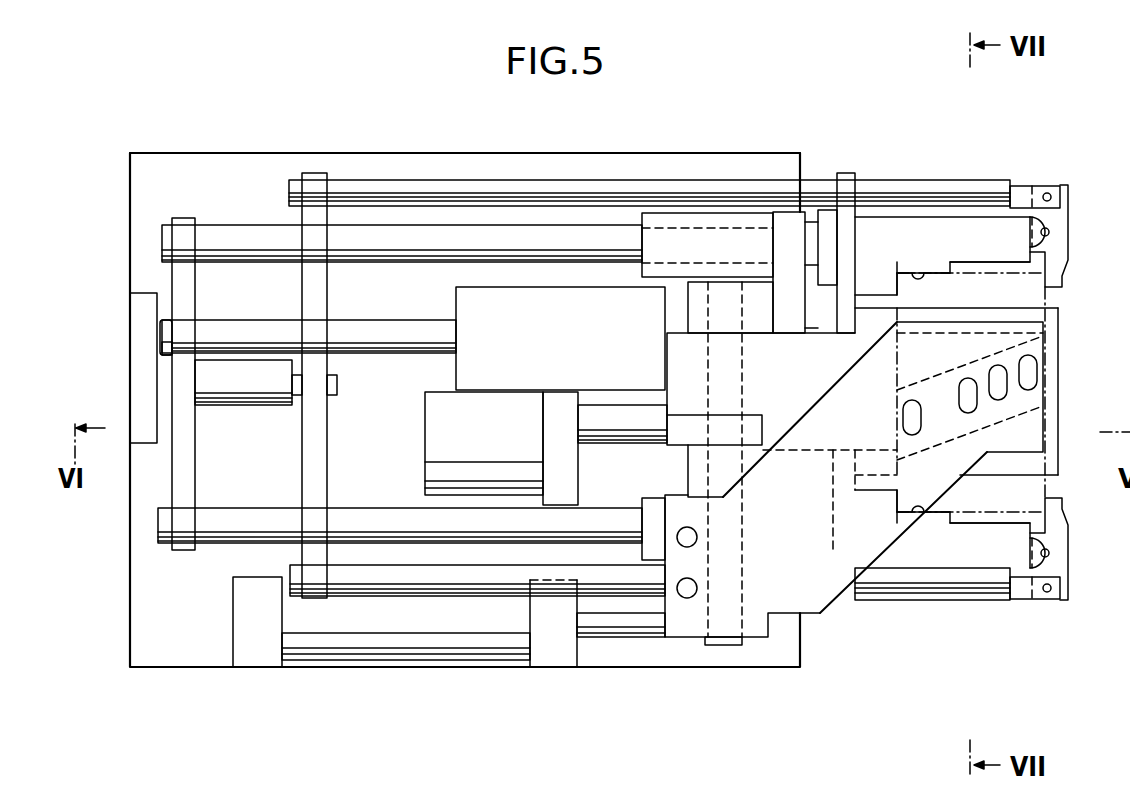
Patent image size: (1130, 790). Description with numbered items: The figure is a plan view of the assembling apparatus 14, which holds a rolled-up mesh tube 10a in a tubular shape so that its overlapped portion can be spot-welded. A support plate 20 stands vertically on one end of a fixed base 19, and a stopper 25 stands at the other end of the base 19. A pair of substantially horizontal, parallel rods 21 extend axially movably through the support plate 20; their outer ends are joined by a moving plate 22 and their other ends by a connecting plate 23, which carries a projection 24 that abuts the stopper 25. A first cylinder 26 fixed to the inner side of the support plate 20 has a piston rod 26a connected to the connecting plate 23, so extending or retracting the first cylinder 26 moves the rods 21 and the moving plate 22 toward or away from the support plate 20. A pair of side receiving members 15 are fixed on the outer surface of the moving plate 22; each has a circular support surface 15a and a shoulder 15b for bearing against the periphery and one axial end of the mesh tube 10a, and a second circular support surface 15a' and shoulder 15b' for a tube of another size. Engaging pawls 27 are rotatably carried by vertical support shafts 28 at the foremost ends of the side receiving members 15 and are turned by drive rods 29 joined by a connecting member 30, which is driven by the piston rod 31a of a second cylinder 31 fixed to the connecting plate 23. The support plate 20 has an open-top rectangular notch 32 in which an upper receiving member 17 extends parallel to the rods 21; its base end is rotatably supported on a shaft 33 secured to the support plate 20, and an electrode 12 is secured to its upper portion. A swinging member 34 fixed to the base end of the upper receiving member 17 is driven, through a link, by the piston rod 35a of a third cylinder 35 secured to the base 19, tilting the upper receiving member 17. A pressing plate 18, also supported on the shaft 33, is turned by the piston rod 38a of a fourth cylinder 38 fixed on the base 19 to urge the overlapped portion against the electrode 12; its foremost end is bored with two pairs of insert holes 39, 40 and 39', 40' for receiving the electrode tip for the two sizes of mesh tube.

The mesh tube 10a is at (1040, 293).
The electrode 12 is at (1046, 410).
The assembling apparatus 14 is at (652, 140).
The side receiving member 15 is at (882, 216).
The circular support surface 15a is at (924, 393).
The circular support surface 15a' is at (990, 393).
The shoulder 15b is at (879, 390).
The shoulder 15b' is at (971, 395).
The upper receiving member 17 is at (672, 337).
The pressing plate 18 is at (810, 422).
The fixed base 19 is at (363, 160).
The support plate 20 is at (790, 212).
The rod 21 is at (372, 252).
The moving plate 22 is at (846, 176).
The connecting plate 23 is at (196, 294).
The projection 24 is at (158, 332).
The stopper 25 is at (130, 327).
The first cylinder 26 is at (576, 345).
The piston rod 26a is at (381, 346).
The engaging pawl 27 is at (1064, 206).
The support shaft 28 is at (1050, 232).
The drive rod 29 is at (475, 180).
The connecting member 30 is at (322, 420).
The second cylinder 31 is at (238, 398).
The piston rod 31a is at (297, 400).
The rectangular notch 32 is at (793, 336).
The shaft 33 is at (718, 463).
The swinging member 34 is at (676, 424).
The third cylinder 35 is at (498, 435).
The piston rod 35a is at (598, 412).
The fourth cylinder 38 is at (401, 640).
The piston rod 38a is at (614, 640).
The insert hole 39 is at (888, 406).
The insert hole 39' is at (947, 377).
The insert hole 40 is at (1039, 367).
The insert hole 40' is at (1050, 375).